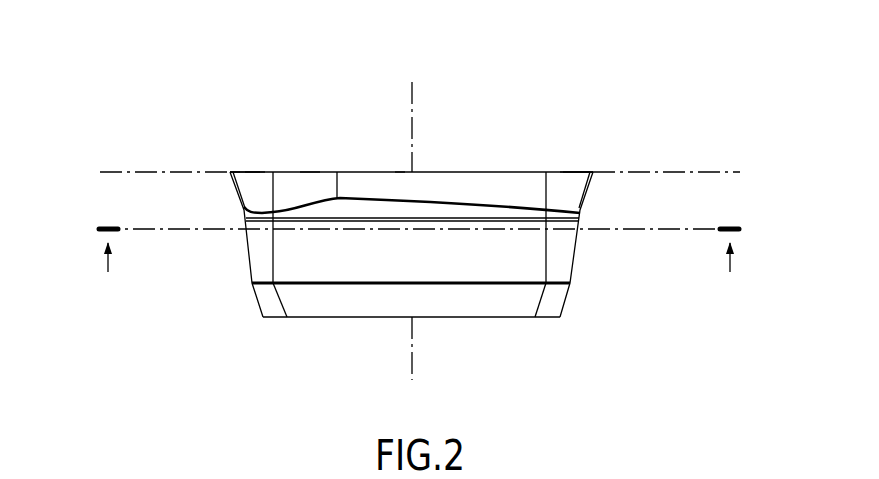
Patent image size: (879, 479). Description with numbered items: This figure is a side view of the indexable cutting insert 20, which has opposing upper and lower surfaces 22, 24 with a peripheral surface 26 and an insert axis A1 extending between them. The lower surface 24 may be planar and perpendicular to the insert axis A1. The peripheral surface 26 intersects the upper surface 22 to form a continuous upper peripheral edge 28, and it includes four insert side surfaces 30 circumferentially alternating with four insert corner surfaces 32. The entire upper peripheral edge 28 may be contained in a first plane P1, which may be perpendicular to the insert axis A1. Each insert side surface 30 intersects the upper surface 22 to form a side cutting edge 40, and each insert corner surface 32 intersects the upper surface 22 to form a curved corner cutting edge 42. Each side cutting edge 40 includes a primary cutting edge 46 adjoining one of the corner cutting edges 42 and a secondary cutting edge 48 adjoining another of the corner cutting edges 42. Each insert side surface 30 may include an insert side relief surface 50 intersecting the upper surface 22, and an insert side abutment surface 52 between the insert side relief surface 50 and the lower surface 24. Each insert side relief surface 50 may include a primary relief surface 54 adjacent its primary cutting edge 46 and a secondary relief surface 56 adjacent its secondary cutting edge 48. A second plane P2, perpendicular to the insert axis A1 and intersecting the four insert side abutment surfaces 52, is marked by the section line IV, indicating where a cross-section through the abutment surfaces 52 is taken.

The indexable cutting insert 20 is at (193, 157).
The upper surface 22 is at (438, 170).
The lower surface 24 is at (440, 319).
The peripheral surface 26 is at (247, 255).
The upper peripheral edge 28 is at (527, 170).
The insert side surface 30 is at (338, 263).
The insert corner surface 32 is at (265, 260).
The side cutting edge 40 is at (230, 169).
The corner cutting edge 42 is at (254, 172).
The primary cutting edge 46 is at (233, 172).
The secondary cutting edge 48 is at (312, 172).
The insert side relief surface 50 is at (474, 187).
The insert side abutment surface 52 is at (466, 258).
The primary relief surface 54 is at (507, 190).
The secondary relief surface 56 is at (292, 185).
The insert axis A1 is at (410, 232).
The first plane P1 is at (422, 172).
The second plane P2 is at (423, 229).
The section line IV is at (97, 297).